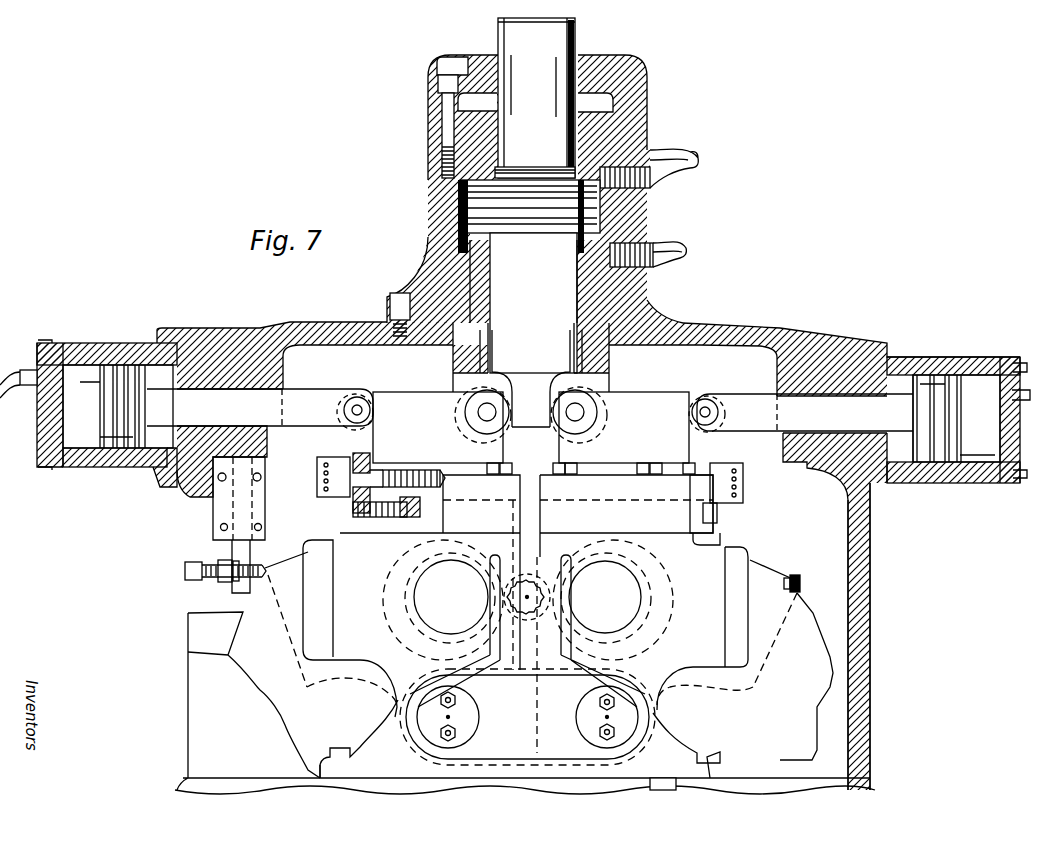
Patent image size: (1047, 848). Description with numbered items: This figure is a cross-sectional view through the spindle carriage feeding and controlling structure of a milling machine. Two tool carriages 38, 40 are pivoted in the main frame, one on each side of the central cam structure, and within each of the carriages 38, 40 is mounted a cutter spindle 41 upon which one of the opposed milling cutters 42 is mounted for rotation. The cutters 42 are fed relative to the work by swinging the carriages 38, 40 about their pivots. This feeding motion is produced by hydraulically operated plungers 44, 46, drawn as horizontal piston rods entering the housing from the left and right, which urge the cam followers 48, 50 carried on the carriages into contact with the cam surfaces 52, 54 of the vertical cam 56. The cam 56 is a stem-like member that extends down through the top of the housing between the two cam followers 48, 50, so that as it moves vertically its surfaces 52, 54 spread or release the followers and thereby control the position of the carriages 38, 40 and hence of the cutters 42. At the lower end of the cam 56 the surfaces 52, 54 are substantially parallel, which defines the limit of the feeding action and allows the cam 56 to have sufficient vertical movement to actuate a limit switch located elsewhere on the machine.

The tool carriage 38 is at (337, 553).
The tool carriage 40 is at (710, 553).
The cutter spindle 41 is at (420, 567).
The milling cutter 42 is at (450, 540).
The hydraulically operated plunger 44 is at (298, 400).
The hydraulically operated plunger 46 is at (740, 407).
The cam follower 48 is at (475, 393).
The cam follower 50 is at (582, 392).
The cam surface 52 is at (491, 370).
The cam surface 54 is at (557, 386).
The cam 56 is at (513, 113).